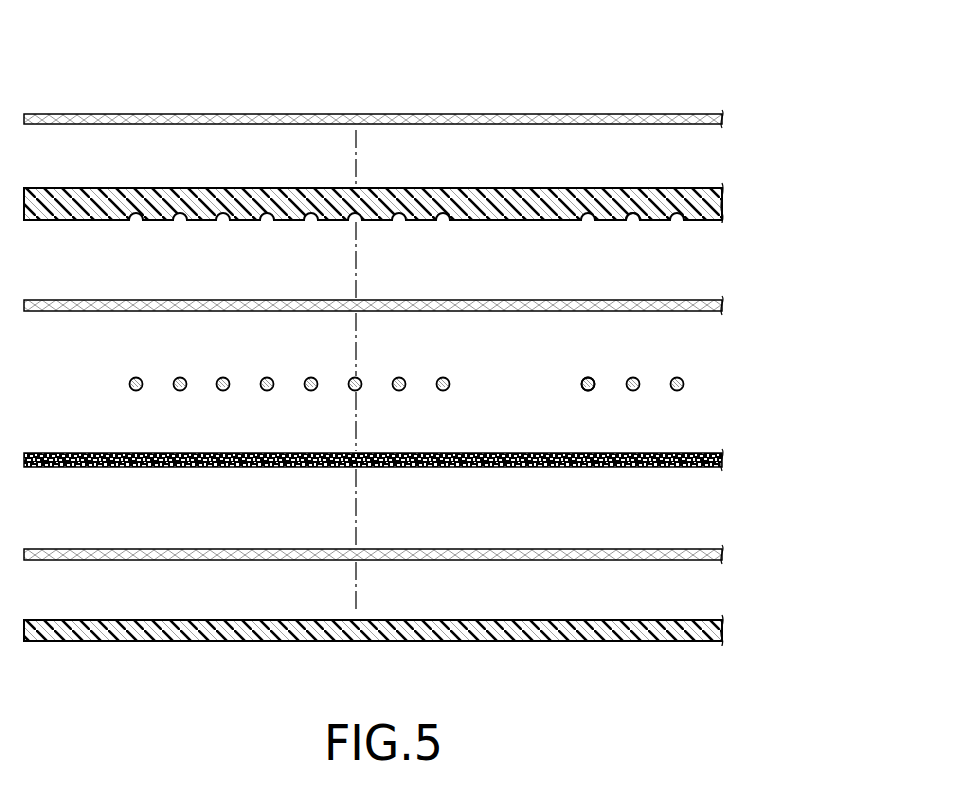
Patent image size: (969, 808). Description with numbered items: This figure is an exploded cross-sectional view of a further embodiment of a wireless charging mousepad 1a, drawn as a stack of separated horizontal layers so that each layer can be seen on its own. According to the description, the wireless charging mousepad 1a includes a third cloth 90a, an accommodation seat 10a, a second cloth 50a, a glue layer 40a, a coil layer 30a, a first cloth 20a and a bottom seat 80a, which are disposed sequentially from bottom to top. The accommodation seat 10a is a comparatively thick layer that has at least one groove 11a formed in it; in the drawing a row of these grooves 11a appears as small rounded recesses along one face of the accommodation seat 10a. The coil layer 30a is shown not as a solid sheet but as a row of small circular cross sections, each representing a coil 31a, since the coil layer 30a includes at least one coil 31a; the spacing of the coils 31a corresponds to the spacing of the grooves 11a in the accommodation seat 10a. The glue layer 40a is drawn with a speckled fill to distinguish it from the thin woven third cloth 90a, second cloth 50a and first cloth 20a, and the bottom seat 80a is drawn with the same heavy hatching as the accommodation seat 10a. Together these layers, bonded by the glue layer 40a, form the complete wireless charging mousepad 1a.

The wireless charging mousepad 1a is at (150, 57).
The third cloth 90a is at (624, 113).
The accommodation seat 10a is at (538, 203).
The groove 11a is at (632, 221).
The first cloth 20a is at (531, 305).
The coil layer 30a is at (690, 374).
The coil 31a is at (588, 377).
The glue layer 40a is at (507, 452).
The second cloth 50a is at (577, 552).
The bottom seat 80a is at (593, 632).